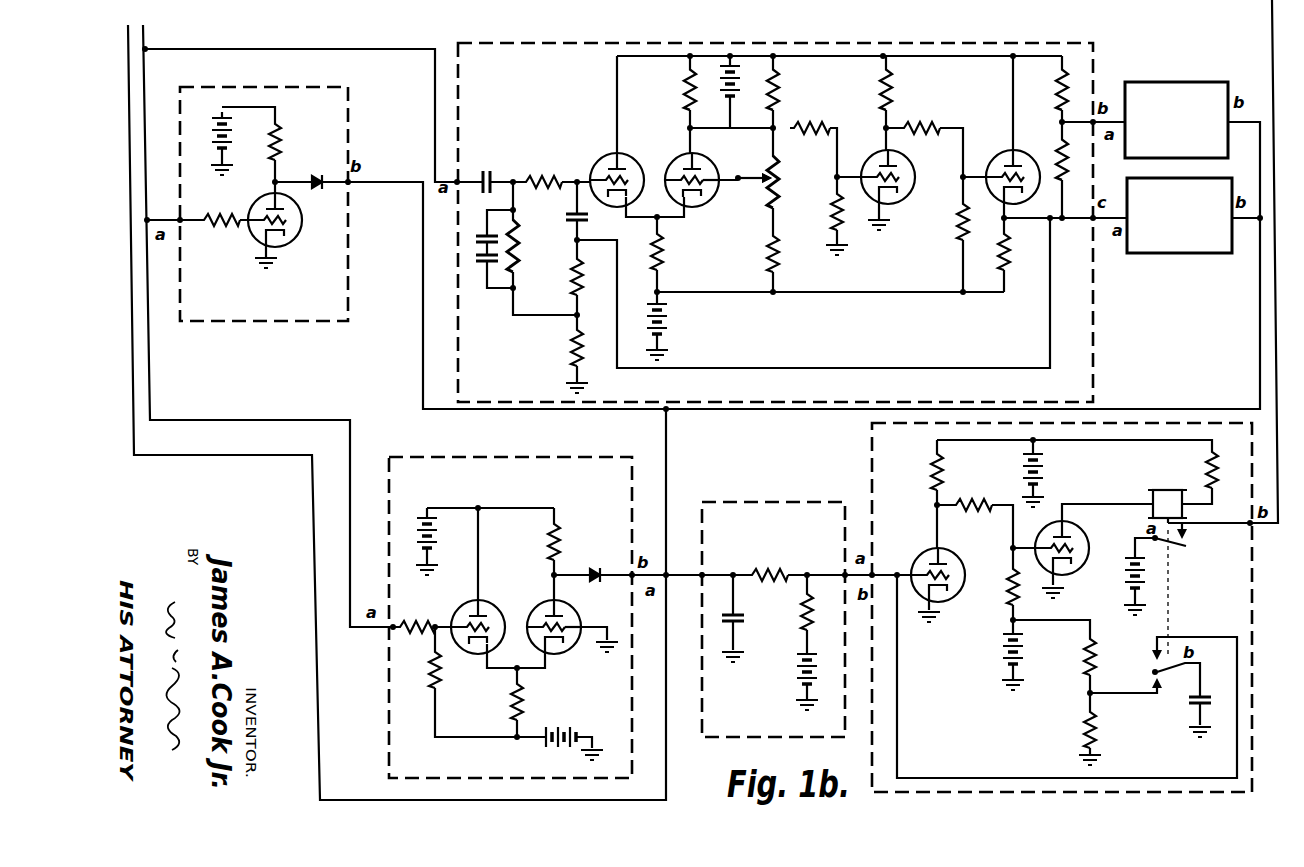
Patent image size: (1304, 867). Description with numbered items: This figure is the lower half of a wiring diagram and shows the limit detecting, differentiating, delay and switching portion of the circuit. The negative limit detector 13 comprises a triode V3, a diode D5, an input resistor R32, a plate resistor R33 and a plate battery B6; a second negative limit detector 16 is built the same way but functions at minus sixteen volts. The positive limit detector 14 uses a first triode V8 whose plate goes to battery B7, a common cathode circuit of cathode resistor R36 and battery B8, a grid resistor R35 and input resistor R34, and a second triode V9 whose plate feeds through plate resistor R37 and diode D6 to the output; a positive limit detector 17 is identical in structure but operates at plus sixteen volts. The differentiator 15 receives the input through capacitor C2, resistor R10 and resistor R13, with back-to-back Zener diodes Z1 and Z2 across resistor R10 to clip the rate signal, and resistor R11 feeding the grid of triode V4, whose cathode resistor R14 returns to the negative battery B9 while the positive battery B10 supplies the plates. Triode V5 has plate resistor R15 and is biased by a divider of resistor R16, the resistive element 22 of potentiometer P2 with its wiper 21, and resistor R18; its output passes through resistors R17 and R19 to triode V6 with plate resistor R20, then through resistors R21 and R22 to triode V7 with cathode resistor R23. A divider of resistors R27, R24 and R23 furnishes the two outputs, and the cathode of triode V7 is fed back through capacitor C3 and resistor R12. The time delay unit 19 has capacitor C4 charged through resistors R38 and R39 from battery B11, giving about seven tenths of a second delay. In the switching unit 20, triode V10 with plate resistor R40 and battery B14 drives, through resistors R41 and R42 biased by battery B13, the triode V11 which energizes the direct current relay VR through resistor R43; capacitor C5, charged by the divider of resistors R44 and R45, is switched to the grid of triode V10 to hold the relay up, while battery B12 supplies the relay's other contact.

The negative limit detector 13 is at (318, 112).
The positive limit detector 14 is at (606, 505).
The differentiator 15 is at (1019, 348).
The second negative limit detector 16 is at (1212, 80).
The positive limit detector 17 is at (1178, 252).
The time delay unit 19 is at (809, 551).
The switching unit 20 is at (1050, 761).
The wiper 21 is at (748, 175).
The resistive element 22 is at (779, 182).
The potentiometer P2 is at (757, 198).
The battery B6 is at (228, 142).
The battery B7 is at (434, 548).
The battery B8 is at (552, 730).
The battery B9 is at (674, 322).
The battery B10 is at (728, 110).
The battery B11 is at (796, 692).
The battery B12 is at (1124, 592).
The battery B13 is at (1026, 662).
The battery B14 is at (1042, 470).
The capacitor C2 is at (498, 168).
The capacitor C3 is at (572, 216).
The capacitor C4 is at (736, 624).
The capacitor C5 is at (1209, 707).
The diode D5 is at (323, 186).
The diode D6 is at (594, 570).
The Zener diode Z1 is at (485, 233).
The Zener diode Z2 is at (487, 264).
The resistor R10 is at (518, 246).
The resistor R11 is at (534, 168).
The resistor R12 is at (572, 282).
The resistor R13 is at (572, 345).
The cathode resistor R14 is at (665, 254).
The plate resistor R15 is at (682, 98).
The resistor R16 is at (780, 90).
The resistor R17 is at (797, 120).
The resistor R18 is at (766, 268).
The resistor R19 is at (834, 218).
The plate resistor R20 is at (894, 90).
The resistor R21 is at (914, 118).
The resistor R22 is at (958, 236).
The cathode resistor R23 is at (1010, 258).
The resistor R24 is at (1058, 140).
The resistor R27 is at (1058, 88).
The input resistor R32 is at (220, 228).
The plate resistor R33 is at (282, 143).
The resistor R34 is at (424, 622).
The resistor R35 is at (440, 680).
The cathode resistor R36 is at (508, 718).
The plate resistor R37 is at (544, 548).
The resistor R38 is at (772, 580).
The resistor R39 is at (800, 630).
The plate resistor R40 is at (942, 466).
The resistor R41 is at (954, 502).
The resistor R42 is at (1006, 598).
The resistor R43 is at (1204, 460).
The resistor R44 is at (1100, 732).
The resistor R45 is at (1096, 662).
The triode V3 is at (254, 198).
The triode V4 is at (634, 160).
The triode V5 is at (708, 204).
The triode V6 is at (904, 158).
The triode V7 is at (1002, 150).
The triode V8 is at (484, 604).
The triode V9 is at (575, 608).
The triode V10 is at (945, 546).
The triode V11 is at (1074, 530).
The direct current relay VR is at (1167, 494).